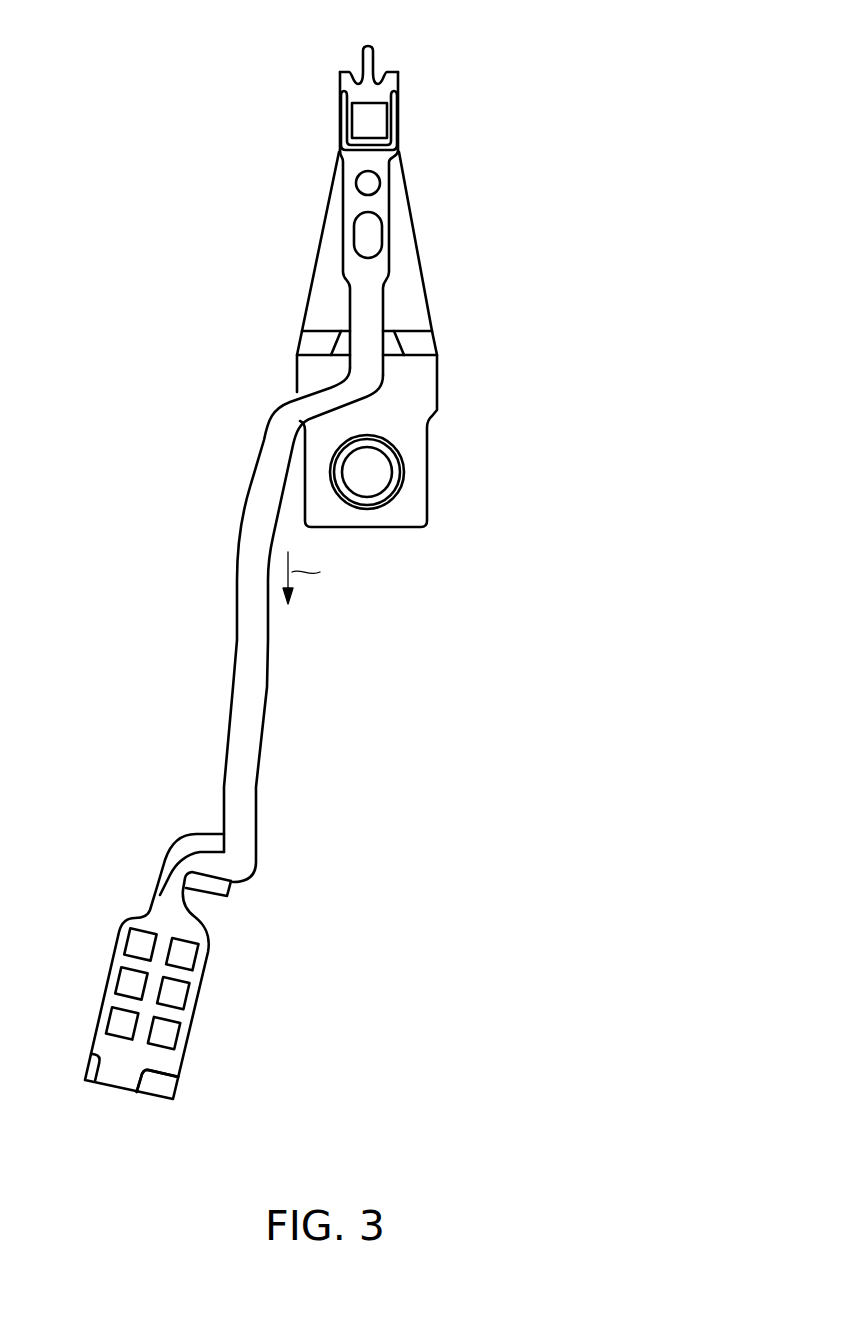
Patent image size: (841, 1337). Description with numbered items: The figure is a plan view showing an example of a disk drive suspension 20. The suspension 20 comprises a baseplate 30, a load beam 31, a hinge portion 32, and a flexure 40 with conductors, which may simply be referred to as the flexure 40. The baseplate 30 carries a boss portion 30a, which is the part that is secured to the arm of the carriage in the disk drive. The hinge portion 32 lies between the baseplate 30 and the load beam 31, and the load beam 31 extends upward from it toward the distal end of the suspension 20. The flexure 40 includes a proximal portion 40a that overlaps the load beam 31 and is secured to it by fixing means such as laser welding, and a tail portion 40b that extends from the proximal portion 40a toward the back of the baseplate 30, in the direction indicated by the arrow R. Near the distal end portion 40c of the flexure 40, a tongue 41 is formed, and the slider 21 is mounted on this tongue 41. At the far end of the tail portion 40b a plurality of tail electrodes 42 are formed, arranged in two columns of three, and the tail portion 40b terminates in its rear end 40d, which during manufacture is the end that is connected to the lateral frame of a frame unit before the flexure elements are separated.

The suspension 20 is at (218, 331).
The slider 21 is at (360, 122).
The baseplate 30 is at (428, 396).
The boss portion 30a is at (393, 477).
The load beam 31 is at (408, 268).
The hinge portion 32 is at (424, 345).
The flexure with conductors 40 is at (237, 542).
The proximal portion 40a is at (357, 203).
The tail portion 40b is at (249, 823).
The distal end portion 40c is at (398, 73).
The rear end 40d is at (118, 1090).
The tongue 41 is at (371, 146).
The tail electrodes 42 is at (120, 1027).